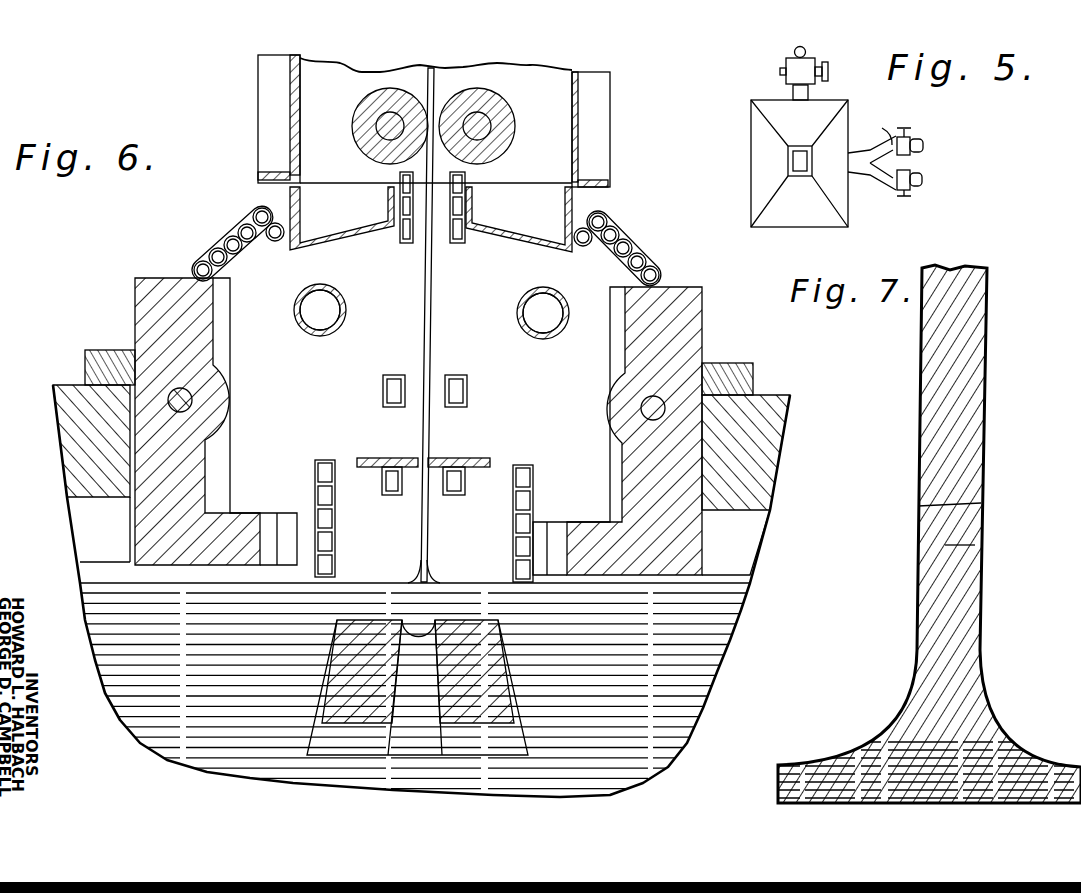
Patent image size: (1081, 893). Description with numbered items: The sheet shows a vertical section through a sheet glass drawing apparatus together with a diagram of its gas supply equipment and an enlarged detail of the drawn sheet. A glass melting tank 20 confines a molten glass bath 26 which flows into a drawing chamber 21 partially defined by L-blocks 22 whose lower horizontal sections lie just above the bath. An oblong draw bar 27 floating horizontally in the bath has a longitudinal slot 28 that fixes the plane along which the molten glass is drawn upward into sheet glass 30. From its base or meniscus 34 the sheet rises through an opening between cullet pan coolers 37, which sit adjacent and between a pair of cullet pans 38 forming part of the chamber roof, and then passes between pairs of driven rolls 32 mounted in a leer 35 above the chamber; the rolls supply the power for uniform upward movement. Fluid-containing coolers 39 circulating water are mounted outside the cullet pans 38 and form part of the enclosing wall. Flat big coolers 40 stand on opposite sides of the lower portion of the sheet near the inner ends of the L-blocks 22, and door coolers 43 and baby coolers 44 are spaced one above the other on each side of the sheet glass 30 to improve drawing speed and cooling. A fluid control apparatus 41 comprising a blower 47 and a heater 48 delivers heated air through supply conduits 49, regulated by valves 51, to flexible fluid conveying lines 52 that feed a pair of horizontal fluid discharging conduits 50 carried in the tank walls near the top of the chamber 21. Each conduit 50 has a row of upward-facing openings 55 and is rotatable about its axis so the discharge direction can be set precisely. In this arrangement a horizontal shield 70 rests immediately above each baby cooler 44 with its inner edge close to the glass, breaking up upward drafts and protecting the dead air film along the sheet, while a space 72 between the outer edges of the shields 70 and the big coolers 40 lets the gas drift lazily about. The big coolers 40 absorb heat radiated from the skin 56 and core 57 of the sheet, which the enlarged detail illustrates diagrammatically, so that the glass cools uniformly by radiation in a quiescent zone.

In FIG. 6, the glass melting tank 20 is at (67, 380).
In FIG. 6, the drawing chamber 21 is at (309, 385).
In FIG. 6, the L-blocks 22 is at (135, 313).
In FIG. 6, the molten glass bath 26 is at (195, 745).
In FIG. 7, the molten glass bath 26 is at (776, 797).
In FIG. 6, the draw bar 27 is at (352, 752).
In FIG. 6, the slot 28 is at (419, 672).
In FIG. 6, the sheet glass 30 is at (434, 275).
In FIG. 7, the sheet glass 30 is at (985, 421).
In FIG. 6, the driven rolls 32 is at (473, 92).
In FIG. 6, the base or meniscus 34 is at (428, 580).
In FIG. 7, the base or meniscus 34 is at (1012, 724).
In FIG. 6, the leer 35 is at (612, 115).
In FIG. 6, the cullet pan coolers 37 is at (472, 230).
In FIG. 6, the cullet pans 38 is at (290, 200).
In FIG. 6, the fluid-containing coolers 39 is at (224, 240).
In FIG. 6, the big coolers 40 is at (335, 559).
In FIG. 5, the fluid control apparatus 41 is at (749, 164).
In FIG. 6, the door coolers 43 is at (455, 374).
In FIG. 6, the baby coolers 44 is at (455, 496).
In FIG. 5, the blower 47 is at (812, 66).
In FIG. 5, the heater 48 is at (764, 128).
In FIG. 5, the supply conduits 49 is at (872, 145).
In FIG. 6, the fluid discharging conduits 50 is at (342, 327).
In FIG. 5, the valves 51 is at (908, 127).
In FIG. 5, the flexible fluid conveying lines 52 is at (921, 175).
In FIG. 6, the openings 55 is at (322, 286).
In FIG. 7, the skin 56 is at (980, 506).
In FIG. 7, the core 57 is at (950, 545).
In FIG. 6, the horizontal shield 70 is at (445, 458).
In FIG. 6, the space 72 is at (340, 460).